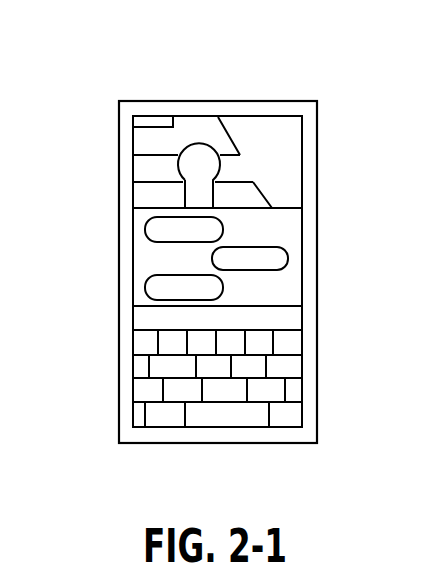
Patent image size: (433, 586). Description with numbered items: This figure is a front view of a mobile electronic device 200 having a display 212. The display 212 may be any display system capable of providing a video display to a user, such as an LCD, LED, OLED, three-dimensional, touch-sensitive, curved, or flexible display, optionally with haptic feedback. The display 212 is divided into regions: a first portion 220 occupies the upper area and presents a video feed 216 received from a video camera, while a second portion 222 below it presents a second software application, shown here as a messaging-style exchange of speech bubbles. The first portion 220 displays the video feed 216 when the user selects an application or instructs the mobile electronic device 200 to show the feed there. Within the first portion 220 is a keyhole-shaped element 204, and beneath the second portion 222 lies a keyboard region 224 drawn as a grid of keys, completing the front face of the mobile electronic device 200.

The mobile electronic device 200 is at (340, 72).
The avatar icon 204 is at (197, 160).
The display 212 is at (98, 245).
The video feed 216 is at (255, 138).
The first portion 220 is at (287, 173).
The second portion 222 is at (287, 232).
The virtual keyboard 224 is at (282, 367).